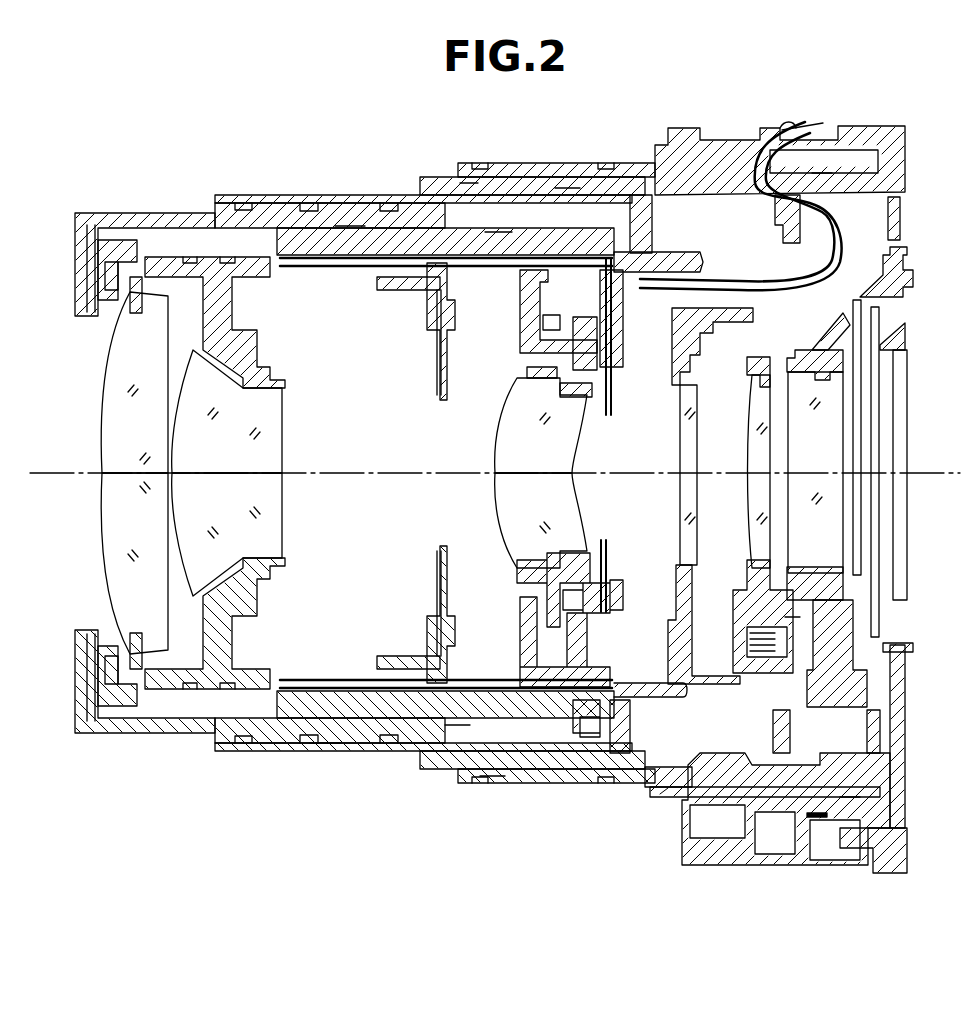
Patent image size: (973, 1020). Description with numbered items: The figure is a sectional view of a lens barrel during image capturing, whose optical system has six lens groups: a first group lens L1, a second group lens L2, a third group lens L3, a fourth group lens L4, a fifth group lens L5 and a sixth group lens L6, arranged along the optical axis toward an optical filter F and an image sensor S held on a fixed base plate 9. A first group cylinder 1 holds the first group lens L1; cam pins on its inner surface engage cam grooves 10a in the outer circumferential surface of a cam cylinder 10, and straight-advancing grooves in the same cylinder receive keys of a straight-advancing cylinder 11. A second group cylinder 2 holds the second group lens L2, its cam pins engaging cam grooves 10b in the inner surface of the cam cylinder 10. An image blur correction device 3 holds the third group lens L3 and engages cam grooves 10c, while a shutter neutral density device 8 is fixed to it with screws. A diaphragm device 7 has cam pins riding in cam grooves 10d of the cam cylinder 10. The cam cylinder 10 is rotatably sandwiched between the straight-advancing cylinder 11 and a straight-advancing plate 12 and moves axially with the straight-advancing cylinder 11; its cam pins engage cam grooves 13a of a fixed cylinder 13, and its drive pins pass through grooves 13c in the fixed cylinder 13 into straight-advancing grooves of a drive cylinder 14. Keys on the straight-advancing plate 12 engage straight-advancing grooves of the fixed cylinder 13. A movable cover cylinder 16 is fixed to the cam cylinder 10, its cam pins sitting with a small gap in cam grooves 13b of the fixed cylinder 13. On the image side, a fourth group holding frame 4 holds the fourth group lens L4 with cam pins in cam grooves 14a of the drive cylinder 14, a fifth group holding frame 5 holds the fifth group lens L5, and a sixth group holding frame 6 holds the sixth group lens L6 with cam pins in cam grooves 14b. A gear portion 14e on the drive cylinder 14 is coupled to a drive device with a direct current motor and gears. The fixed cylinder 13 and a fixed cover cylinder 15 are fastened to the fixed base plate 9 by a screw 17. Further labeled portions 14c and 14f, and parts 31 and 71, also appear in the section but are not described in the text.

The first group cylinder 1 is at (128, 263).
The second group cylinder 2 is at (173, 644).
The image blur correction device 3 is at (551, 598).
The fourth group holding frame 4 is at (695, 615).
The fifth group holding frame 5 is at (793, 617).
The sixth group holding frame 6 is at (837, 667).
The diaphragm device 7 is at (416, 285).
The shutter neutral density (ND) device 8 is at (610, 188).
The fixed base plate 9 is at (902, 735).
The cam cylinder 10 is at (385, 712).
The cam grooves 10a is at (325, 745).
The cam grooves 10b is at (350, 226).
The cam grooves 10c is at (498, 232).
The cam grooves 10d is at (457, 725).
The straight-advancing cylinder 11 is at (270, 214).
The straight-advancing plate 12 is at (620, 752).
The fixed cylinder 13 is at (482, 184).
The cam grooves 13a is at (568, 188).
The cam grooves 13b is at (467, 183).
The grooves 13c is at (652, 790).
The drive cylinder 14 is at (710, 172).
The cam grooves 14a is at (810, 795).
The cam grooves 14b is at (822, 173).
The mount base portion 14c is at (493, 776).
The gear portion 14e is at (850, 797).
The mount base portion 14f is at (787, 127).
The fixed cover cylinder 15 is at (823, 840).
The movable cover cylinder 16 is at (216, 748).
The screw 17 is at (895, 845).
The connector 31 is at (893, 260).
The flexible board portion 71 is at (900, 216).
The first group lens L1 is at (130, 380).
The second group lens L2 is at (187, 523).
The third group lens L3 is at (515, 437).
The fourth group lens L4 is at (688, 453).
The fifth group lens L5 is at (758, 413).
The sixth group lens L6 is at (828, 397).
The optical filter F is at (850, 503).
The image sensor S is at (885, 550).